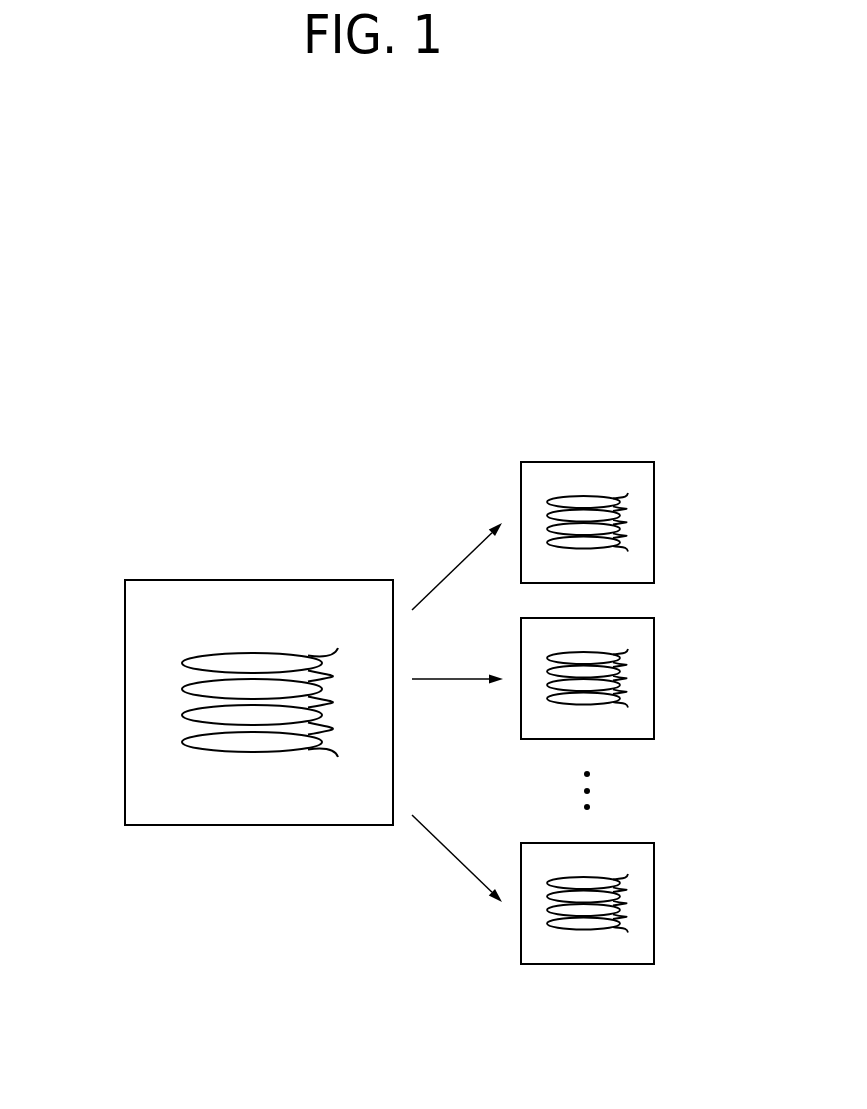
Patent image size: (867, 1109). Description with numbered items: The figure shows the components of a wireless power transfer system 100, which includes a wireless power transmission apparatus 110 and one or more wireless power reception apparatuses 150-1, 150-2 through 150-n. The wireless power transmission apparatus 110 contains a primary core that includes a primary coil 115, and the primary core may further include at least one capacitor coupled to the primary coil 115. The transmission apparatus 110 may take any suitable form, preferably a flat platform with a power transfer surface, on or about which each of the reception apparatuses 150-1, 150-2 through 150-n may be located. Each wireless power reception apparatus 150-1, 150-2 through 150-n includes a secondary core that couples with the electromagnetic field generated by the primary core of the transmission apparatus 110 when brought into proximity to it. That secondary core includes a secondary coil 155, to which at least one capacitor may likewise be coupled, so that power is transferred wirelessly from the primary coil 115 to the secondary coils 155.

The wireless power transfer system 100 is at (137, 455).
The wireless power transmission apparatus 110 is at (257, 580).
The primary coil 115 is at (262, 753).
The wireless power reception apparatus 150-1 is at (654, 521).
The wireless power reception apparatus 150-2 is at (654, 677).
The wireless power reception apparatus 150-n is at (654, 902).
The secondary coil 155 is at (651, 700).